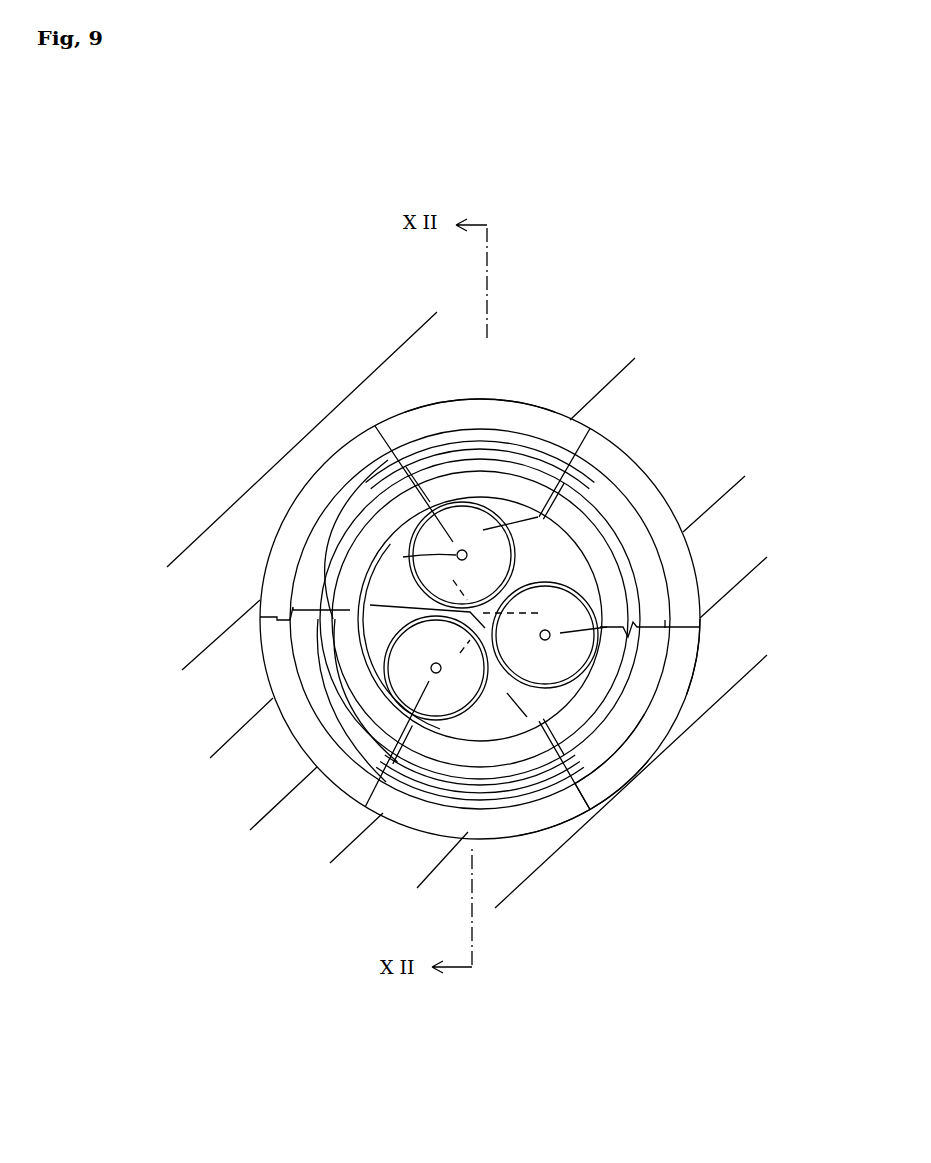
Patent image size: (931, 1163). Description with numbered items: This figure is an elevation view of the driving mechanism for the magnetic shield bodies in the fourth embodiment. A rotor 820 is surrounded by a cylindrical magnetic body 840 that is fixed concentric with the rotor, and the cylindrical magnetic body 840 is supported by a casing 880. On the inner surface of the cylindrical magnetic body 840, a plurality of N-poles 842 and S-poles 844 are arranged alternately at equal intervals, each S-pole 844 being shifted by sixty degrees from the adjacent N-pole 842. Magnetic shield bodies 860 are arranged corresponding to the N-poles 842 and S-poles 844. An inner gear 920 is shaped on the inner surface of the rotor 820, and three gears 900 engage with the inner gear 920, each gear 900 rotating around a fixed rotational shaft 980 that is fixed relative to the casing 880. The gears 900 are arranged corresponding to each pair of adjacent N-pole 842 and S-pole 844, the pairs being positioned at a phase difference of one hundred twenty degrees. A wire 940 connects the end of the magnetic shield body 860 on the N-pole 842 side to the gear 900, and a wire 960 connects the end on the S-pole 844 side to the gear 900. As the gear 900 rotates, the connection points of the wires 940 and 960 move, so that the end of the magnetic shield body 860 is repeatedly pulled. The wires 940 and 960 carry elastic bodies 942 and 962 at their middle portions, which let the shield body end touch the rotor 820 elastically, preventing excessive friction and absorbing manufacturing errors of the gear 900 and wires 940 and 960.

The rotor 820 is at (625, 580).
The cylindrical magnetic body 840 is at (693, 652).
The N-pole 842 is at (557, 810).
The S-pole 844 is at (642, 750).
The magnetic shield body 860 is at (337, 525).
The casing 880 is at (217, 622).
The gear 900 is at (548, 505).
The inner gear 920 is at (623, 580).
The wire 940 is at (423, 453).
The elastic body 942 is at (484, 398).
The wire 960 is at (428, 793).
The elastic body 962 is at (606, 840).
The fixed rotational shaft 980 is at (360, 622).